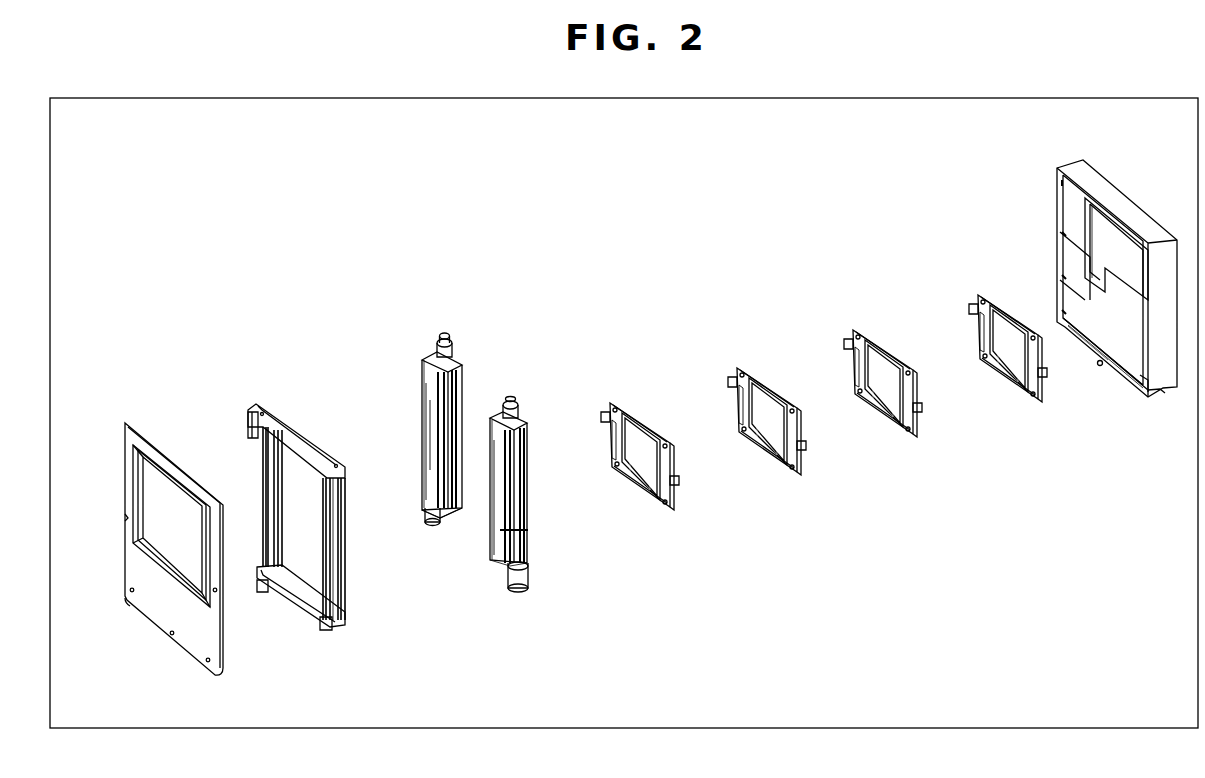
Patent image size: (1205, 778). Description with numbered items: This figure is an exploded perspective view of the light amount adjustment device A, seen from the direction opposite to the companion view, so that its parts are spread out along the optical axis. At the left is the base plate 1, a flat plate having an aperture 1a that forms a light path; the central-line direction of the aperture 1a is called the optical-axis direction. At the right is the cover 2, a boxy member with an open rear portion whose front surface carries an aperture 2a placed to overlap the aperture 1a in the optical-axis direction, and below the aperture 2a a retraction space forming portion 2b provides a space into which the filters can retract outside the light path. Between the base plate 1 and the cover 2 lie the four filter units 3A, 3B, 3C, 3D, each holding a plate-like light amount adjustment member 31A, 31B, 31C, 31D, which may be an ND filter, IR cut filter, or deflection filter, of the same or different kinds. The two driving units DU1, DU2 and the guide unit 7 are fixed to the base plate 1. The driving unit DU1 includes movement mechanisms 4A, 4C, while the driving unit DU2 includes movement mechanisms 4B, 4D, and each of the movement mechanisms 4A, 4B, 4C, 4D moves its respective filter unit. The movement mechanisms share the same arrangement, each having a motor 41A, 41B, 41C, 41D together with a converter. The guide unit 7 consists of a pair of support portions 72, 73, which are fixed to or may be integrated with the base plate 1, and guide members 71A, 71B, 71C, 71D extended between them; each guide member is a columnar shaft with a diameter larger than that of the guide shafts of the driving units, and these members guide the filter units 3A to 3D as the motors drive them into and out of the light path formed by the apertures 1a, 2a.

The light amount adjustment device A is at (214, 266).
The base plate 1 is at (157, 421).
The aperture 1a is at (158, 490).
The cover 2 is at (1150, 195).
The aperture 2a is at (1112, 238).
The retraction space forming portion 2b is at (1123, 337).
The filter unit 3A is at (616, 381).
The filter unit 3B is at (731, 355).
The filter unit 3C is at (849, 315).
The filter unit 3D is at (964, 286).
The light amount adjustment member 31A is at (638, 467).
The light amount adjustment member 31B is at (760, 435).
The light amount adjustment member 31C is at (882, 400).
The light amount adjustment member 31D is at (1005, 373).
The movement mechanism 4A is at (515, 393).
The movement mechanism 4B is at (428, 537).
The movement mechanism 4C is at (515, 601).
The movement mechanism 4D is at (429, 326).
The motor 41A is at (516, 408).
The motor 41B is at (425, 517).
The motor 41C is at (530, 577).
The motor 41D is at (436, 345).
The guide unit 7 is at (298, 513).
The guide member 71A is at (262, 462).
The guide member 71B is at (331, 533).
The guide member 71C is at (276, 488).
The guide member 71D is at (342, 590).
The support portion 72 is at (308, 442).
The support portion 73 is at (298, 590).
The driving unit DU1 is at (541, 500).
The driving unit DU2 is at (432, 424).